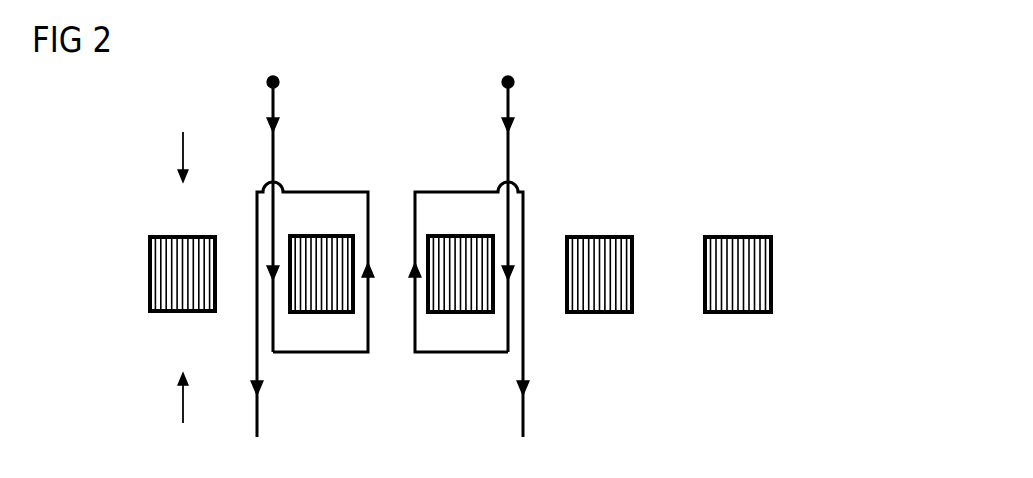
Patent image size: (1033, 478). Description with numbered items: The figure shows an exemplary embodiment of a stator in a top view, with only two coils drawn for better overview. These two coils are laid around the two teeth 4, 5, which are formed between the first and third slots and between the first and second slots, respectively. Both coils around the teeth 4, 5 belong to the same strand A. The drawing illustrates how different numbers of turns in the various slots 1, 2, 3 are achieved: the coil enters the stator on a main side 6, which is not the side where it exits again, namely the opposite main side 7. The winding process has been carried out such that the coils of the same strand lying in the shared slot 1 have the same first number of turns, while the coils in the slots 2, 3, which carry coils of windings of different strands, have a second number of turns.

The first slot 1 is at (398, 285).
The second slot 2 is at (552, 286).
The third slot 3 is at (243, 283).
The tooth 4 is at (317, 236).
The tooth 5 is at (455, 236).
The main side 6 is at (194, 157).
The opposite main side 7 is at (194, 401).